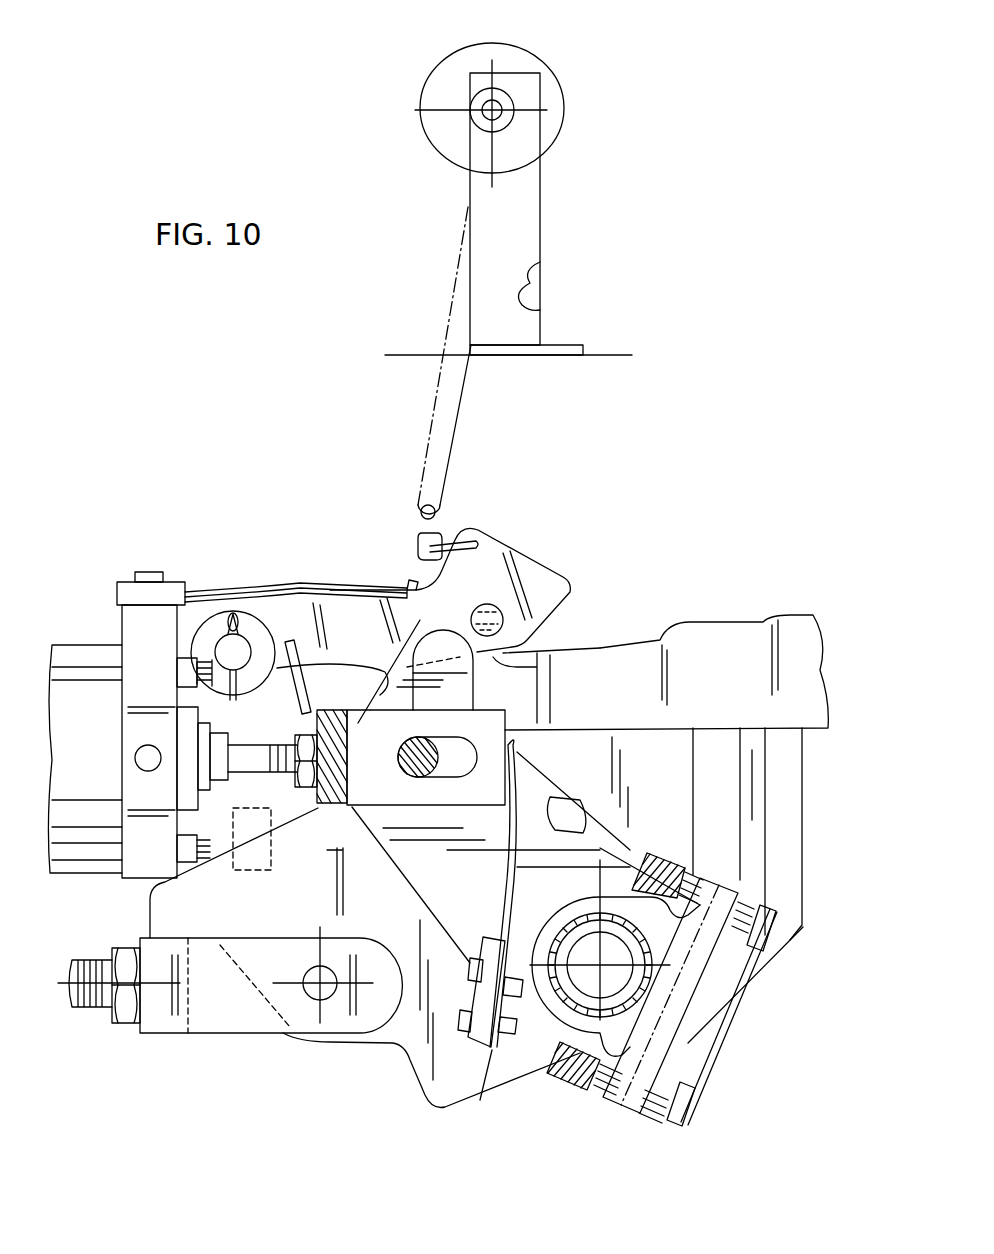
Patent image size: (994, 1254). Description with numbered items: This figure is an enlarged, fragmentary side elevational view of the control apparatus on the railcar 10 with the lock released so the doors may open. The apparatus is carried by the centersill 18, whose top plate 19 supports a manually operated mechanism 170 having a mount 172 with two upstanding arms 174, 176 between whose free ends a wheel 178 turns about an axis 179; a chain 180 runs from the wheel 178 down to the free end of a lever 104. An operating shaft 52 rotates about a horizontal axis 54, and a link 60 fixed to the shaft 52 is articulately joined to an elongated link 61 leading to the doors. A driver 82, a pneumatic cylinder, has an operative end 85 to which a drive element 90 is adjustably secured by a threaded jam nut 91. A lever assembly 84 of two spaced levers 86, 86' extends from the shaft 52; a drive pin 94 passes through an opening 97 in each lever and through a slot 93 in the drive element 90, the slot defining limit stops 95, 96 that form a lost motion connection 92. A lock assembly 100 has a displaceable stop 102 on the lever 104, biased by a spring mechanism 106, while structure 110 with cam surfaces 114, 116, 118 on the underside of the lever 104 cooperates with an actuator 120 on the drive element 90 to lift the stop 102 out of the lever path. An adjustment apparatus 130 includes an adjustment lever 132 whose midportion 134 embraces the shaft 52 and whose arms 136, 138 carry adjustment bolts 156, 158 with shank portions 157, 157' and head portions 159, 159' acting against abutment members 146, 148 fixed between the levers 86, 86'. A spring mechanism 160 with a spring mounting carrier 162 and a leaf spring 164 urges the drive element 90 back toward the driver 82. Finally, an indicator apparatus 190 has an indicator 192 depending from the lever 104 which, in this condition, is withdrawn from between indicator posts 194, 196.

The railcar 10 is at (744, 558).
The centersill 18 is at (393, 354).
The top plate 19 is at (615, 352).
The operating shaft 52 is at (612, 968).
The axis 54 is at (653, 1003).
The link 60 is at (443, 1100).
The link 61 is at (237, 1023).
The driver 82 is at (85, 652).
The lever assembly 84 is at (557, 767).
The operative end 85 is at (250, 757).
The lever 86 is at (572, 797).
The lever 86' is at (650, 849).
The drive element 90 is at (493, 713).
The threaded jam nut 91 is at (318, 790).
The lost motion connection 92 is at (427, 793).
The slot 93 is at (463, 780).
The drive pin 94 is at (470, 738).
The limit stop 95 is at (477, 752).
The limit stop 96 is at (412, 748).
The opening 97 is at (407, 768).
The lock assembly 100 is at (520, 633).
The stop 102 is at (493, 608).
The lever 104 is at (552, 594).
The spring mechanism 106 is at (193, 585).
The structure 110 is at (344, 692).
The cam surface 114 is at (277, 670).
The cam surface 116 is at (352, 672).
The cam surface 118 is at (550, 663).
The actuator 120 is at (405, 638).
The adjustment apparatus 130 is at (597, 1100).
The adjustment lever 132 is at (633, 1117).
The midportion 134 is at (558, 917).
The arm 136 is at (623, 1117).
The arm 138 is at (728, 885).
The abutment member 146 is at (578, 1113).
The abutment member 148 is at (675, 862).
The adjustment bolt 156 is at (687, 1113).
The shank portion 157 is at (580, 1182).
The shank portion 157' is at (725, 836).
The adjustment bolt 158 is at (778, 927).
The head portion 159 is at (731, 1110).
The head portion 159' is at (775, 1002).
The spring mechanism 160 is at (467, 1053).
The spring mounting carrier 162 is at (562, 1087).
The leaf spring 164 is at (497, 925).
The manually operated mechanism 170 is at (487, 194).
The mount 172 is at (560, 232).
The arm 174 is at (555, 180).
The arm 176 is at (538, 287).
The wheel 178 is at (550, 110).
The axis 179 is at (498, 108).
The chain 180 is at (460, 440).
The indicator apparatus 190 is at (318, 838).
The indicator 192 is at (313, 873).
The indicator post 194 is at (250, 877).
The indicator post 196 is at (411, 943).